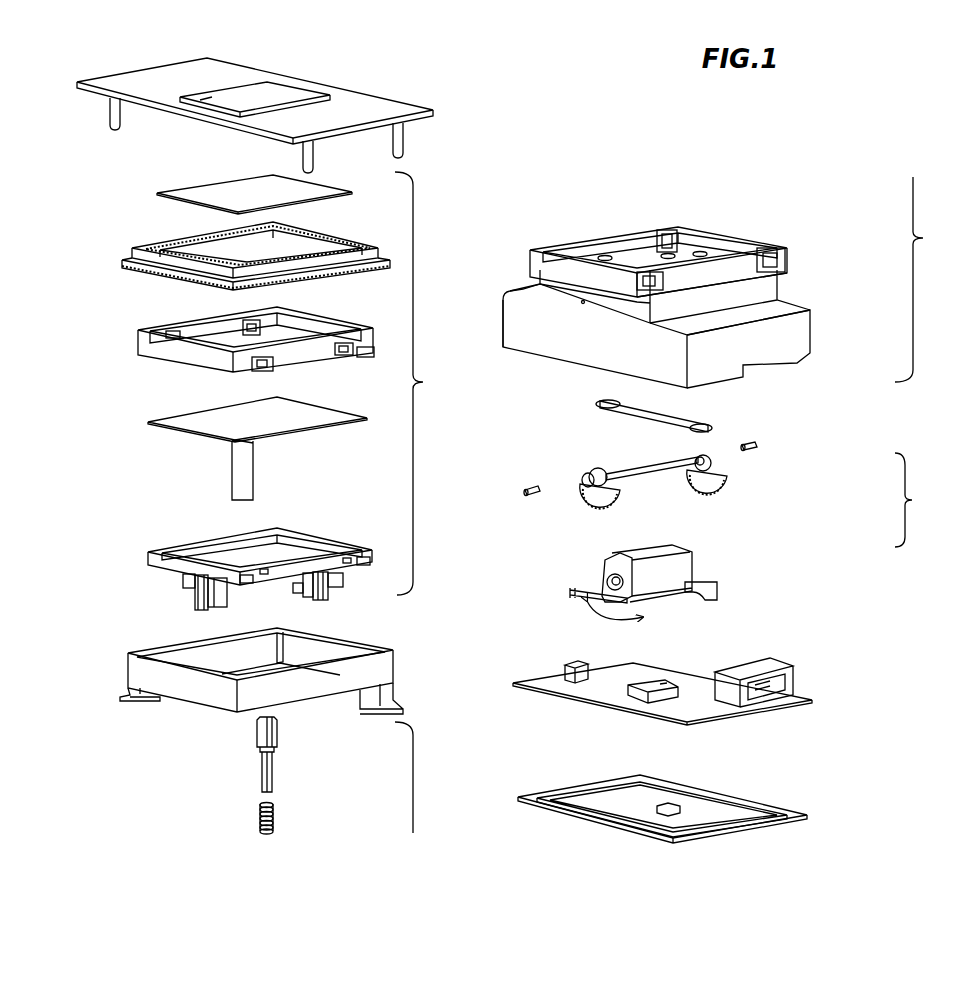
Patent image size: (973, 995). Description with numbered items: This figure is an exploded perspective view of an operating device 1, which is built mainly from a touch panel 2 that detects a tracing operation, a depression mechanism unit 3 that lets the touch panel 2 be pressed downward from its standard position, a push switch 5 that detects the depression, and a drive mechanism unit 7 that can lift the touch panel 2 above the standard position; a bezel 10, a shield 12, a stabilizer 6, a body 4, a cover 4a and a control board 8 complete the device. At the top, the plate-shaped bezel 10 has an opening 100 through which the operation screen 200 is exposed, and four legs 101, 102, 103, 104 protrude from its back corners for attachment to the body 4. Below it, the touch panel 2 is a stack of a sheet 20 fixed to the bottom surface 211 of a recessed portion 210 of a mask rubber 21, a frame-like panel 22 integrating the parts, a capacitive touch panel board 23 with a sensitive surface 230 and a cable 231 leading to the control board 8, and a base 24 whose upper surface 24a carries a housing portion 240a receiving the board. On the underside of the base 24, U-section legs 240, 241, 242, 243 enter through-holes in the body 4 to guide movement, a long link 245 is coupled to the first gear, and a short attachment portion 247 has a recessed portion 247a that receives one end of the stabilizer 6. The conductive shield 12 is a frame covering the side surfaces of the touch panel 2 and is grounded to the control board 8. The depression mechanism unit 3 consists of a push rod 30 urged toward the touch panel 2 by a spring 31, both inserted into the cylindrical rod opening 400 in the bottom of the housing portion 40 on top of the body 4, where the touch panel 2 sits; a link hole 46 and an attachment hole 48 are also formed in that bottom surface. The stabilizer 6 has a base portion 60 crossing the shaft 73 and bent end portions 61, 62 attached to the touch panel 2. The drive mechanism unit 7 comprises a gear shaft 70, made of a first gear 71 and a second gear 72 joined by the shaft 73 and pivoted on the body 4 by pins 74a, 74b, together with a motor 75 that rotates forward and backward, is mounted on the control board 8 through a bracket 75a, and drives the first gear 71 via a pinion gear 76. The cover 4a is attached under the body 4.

The operating device 1 is at (918, 140).
The bezel 10 is at (264, 105).
The opening 100 is at (283, 88).
The leg 101 is at (400, 148).
The leg 102 is at (317, 157).
The leg 103 is at (113, 128).
The leg 104 is at (205, 100).
The touch panel 2 is at (419, 383).
The sheet 20 is at (223, 184).
The operation screen 200 is at (222, 193).
The mask rubber 21 is at (237, 246).
The recessed portion 210 is at (175, 247).
The bottom surface 211 is at (298, 248).
The panel 22 is at (147, 347).
The touch panel board 23 is at (230, 436).
The sensitive surface 230 is at (183, 420).
The cable 231 is at (247, 473).
The base 24 is at (244, 564).
The upper surface 24a is at (170, 548).
The leg 240 is at (223, 598).
The housing portion 240a is at (283, 537).
The leg 241 is at (187, 582).
The leg 242 is at (343, 583).
The leg 243 is at (330, 593).
The link 245 is at (200, 590).
The attachment portion 247 is at (310, 597).
The recessed portion 247a is at (294, 592).
The shield 12 is at (140, 677).
The push rod 30 is at (257, 737).
The spring 31 is at (260, 813).
The depression mechanism unit 3 is at (918, 279).
The housing portion 40 is at (658, 240).
The rod opening 400 is at (668, 238).
The link hole 46 is at (703, 253).
The attachment hole 48 is at (617, 257).
The body 4 is at (797, 337).
The cover 4a is at (758, 815).
The stabilizer 6 is at (673, 405).
The base portion 60 is at (643, 417).
The end portion 61 is at (698, 423).
The end portion 62 is at (617, 405).
The drive mechanism unit 7 is at (913, 500).
The gear shaft 70 is at (652, 479).
The first gear 71 is at (595, 493).
The second gear 72 is at (708, 490).
The shaft 73 is at (667, 466).
The pin 74a is at (533, 486).
The pin 74b is at (758, 445).
The motor 75 is at (672, 583).
The bracket 75a is at (705, 588).
The pinion gear 76 is at (613, 582).
The push switch 5 is at (663, 685).
The control board 8 is at (675, 675).